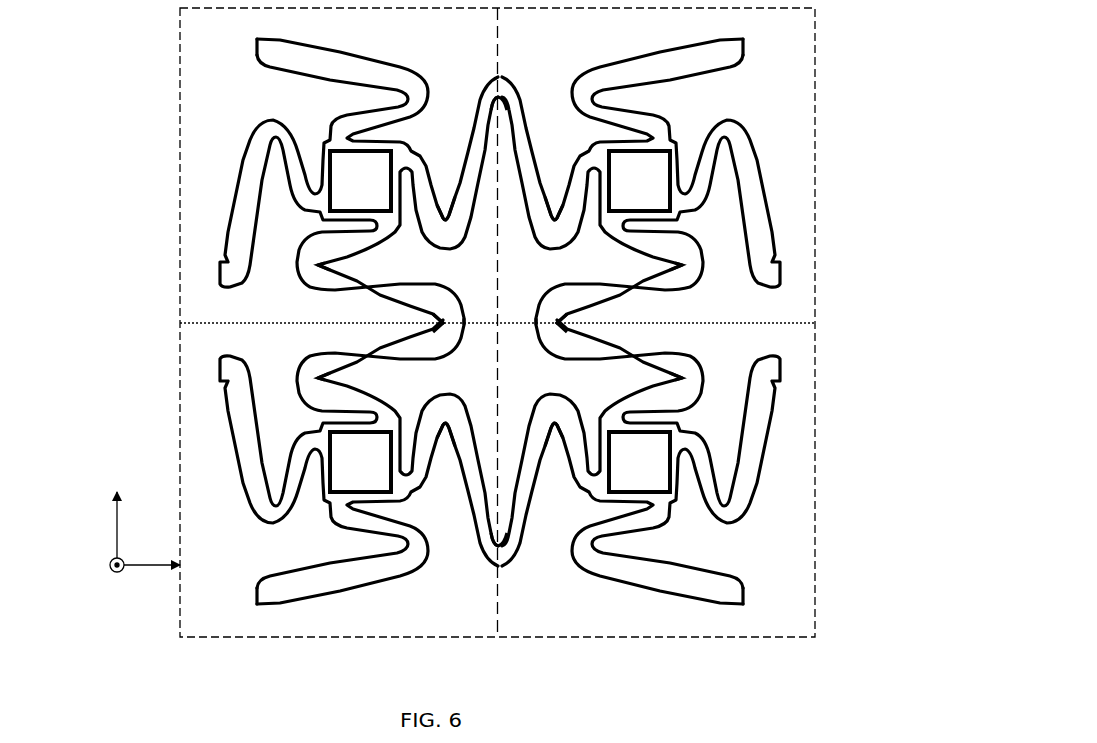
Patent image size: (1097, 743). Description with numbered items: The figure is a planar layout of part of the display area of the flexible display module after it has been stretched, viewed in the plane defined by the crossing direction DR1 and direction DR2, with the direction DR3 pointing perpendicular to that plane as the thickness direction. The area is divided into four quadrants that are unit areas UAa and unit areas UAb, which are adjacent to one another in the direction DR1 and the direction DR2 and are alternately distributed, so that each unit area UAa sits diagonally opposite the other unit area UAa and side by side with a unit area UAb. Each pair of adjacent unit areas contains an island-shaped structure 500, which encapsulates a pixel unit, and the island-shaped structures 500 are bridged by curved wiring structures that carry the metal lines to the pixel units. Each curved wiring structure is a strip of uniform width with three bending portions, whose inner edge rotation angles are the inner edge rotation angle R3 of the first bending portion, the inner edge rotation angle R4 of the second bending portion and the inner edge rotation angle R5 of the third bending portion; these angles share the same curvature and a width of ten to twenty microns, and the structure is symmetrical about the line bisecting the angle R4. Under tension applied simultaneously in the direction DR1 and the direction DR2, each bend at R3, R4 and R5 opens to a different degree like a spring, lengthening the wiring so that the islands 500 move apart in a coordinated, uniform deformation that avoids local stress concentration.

The island-shaped structure 500 is at (500, 321).
The inner edge rotation angle of the first bending portion R3 is at (447, 218).
The inner edge rotation angle of the second bending portion R4 is at (441, 321).
The inner edge rotation angle of the third bending portion R5 is at (553, 216).
The unit area UAa is at (178, 88).
The unit area UAb is at (820, 106).
The direction DR1 is at (118, 509).
The direction DR2 is at (180, 571).
The direction DR3 is at (113, 588).